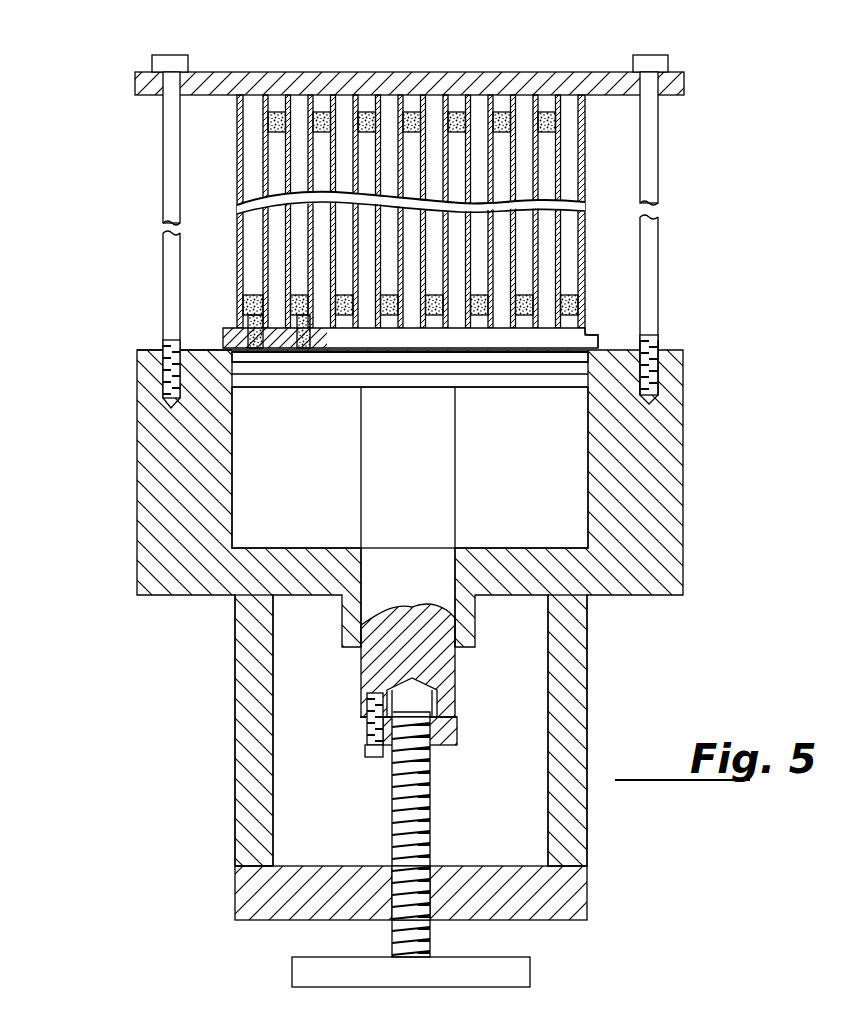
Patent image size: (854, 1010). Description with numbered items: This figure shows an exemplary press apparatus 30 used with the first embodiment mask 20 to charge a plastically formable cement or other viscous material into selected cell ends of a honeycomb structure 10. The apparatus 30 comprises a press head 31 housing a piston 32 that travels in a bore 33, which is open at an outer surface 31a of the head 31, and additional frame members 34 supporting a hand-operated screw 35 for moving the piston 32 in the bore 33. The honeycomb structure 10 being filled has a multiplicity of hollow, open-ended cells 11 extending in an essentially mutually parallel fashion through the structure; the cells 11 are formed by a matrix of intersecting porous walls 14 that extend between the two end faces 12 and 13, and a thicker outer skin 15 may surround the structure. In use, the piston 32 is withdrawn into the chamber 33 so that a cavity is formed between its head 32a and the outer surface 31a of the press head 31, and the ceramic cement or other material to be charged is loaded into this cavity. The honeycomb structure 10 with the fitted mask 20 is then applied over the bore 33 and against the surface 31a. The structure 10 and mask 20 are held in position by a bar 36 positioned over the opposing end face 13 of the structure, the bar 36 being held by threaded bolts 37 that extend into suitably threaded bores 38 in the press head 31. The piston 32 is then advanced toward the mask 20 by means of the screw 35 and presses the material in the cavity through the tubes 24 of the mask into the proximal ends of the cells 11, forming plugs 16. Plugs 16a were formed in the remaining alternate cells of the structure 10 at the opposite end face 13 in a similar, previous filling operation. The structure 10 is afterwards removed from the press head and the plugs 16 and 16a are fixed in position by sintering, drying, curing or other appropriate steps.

The honeycomb structure 10 is at (418, 230).
The cells 11 is at (383, 211).
The end face 12 is at (604, 315).
The end face 13 is at (409, 50).
The walls 14 is at (252, 211).
The outer skin 15 is at (416, 211).
The plugs 16 is at (410, 372).
The plugs 16a is at (412, 71).
The mask 20 is at (479, 328).
The tubes 24 is at (279, 384).
The press apparatus 30 is at (353, 730).
The press head 31 is at (362, 608).
The outer surface 31a is at (152, 316).
The piston 32 is at (410, 406).
The piston head 32a is at (410, 399).
The bore 33 is at (489, 467).
The frame members 34 is at (367, 890).
The hand-operated screw 35 is at (459, 687).
The bar 36 is at (582, 52).
The threaded bolts 37 is at (411, 231).
The threaded bores 38 is at (703, 368).